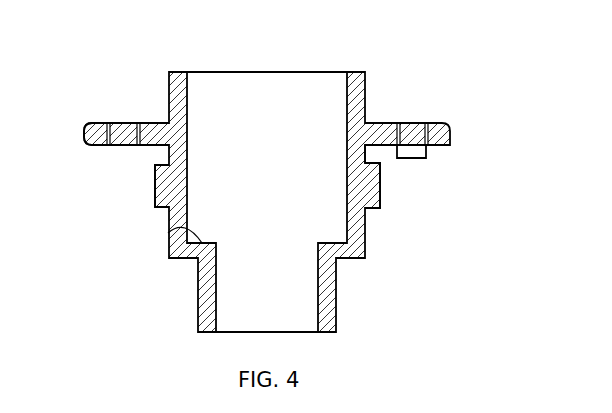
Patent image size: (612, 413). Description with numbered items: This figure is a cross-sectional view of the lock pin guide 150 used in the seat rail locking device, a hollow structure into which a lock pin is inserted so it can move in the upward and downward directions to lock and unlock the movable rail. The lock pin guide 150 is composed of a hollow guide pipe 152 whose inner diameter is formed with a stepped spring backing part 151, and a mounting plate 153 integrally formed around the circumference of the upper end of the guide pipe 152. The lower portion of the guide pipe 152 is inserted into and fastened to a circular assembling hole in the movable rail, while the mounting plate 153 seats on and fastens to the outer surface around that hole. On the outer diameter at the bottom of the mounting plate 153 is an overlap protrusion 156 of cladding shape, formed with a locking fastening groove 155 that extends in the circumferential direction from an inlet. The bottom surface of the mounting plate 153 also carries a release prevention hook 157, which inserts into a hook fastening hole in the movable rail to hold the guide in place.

The lock pin guide 150 is at (388, 107).
The spring backing part 151 is at (168, 233).
The guide pipe 152 is at (168, 212).
The mounting plate 153 is at (95, 127).
The locking fastening groove 155 is at (368, 153).
The overlap protrusion 156 is at (380, 193).
The release prevention hook 157 is at (417, 152).